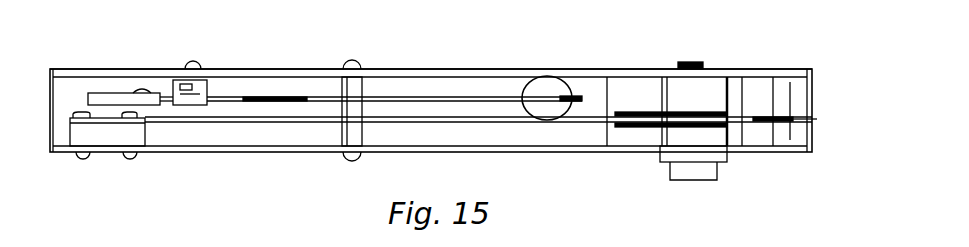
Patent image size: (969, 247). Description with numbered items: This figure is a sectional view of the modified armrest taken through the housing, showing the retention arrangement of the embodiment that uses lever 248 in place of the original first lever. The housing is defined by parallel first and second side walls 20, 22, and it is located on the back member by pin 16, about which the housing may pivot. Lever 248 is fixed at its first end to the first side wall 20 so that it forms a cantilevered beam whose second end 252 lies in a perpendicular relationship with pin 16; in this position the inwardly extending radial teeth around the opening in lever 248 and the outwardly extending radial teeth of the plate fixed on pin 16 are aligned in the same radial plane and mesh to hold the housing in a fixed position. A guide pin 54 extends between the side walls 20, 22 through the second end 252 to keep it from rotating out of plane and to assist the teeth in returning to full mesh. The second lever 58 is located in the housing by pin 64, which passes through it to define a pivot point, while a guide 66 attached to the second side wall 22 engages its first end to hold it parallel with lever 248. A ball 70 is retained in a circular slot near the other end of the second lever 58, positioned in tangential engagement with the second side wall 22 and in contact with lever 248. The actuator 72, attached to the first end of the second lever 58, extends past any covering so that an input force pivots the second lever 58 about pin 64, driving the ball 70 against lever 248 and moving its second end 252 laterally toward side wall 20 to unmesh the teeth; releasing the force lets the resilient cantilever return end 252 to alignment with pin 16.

The pin 16 is at (702, 172).
The first side wall 20 is at (237, 152).
The second side wall 22 is at (453, 69).
The guide pin 54 is at (733, 85).
The second lever 58 is at (312, 96).
The pin 64 is at (352, 133).
The guide 66 is at (225, 79).
The ball 70 is at (548, 87).
The actuator 72 is at (98, 94).
The lever 248 is at (587, 122).
The second end 252 is at (817, 119).